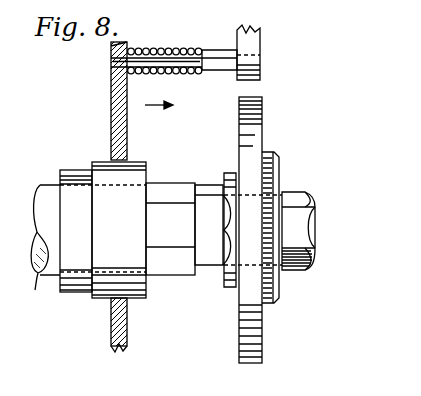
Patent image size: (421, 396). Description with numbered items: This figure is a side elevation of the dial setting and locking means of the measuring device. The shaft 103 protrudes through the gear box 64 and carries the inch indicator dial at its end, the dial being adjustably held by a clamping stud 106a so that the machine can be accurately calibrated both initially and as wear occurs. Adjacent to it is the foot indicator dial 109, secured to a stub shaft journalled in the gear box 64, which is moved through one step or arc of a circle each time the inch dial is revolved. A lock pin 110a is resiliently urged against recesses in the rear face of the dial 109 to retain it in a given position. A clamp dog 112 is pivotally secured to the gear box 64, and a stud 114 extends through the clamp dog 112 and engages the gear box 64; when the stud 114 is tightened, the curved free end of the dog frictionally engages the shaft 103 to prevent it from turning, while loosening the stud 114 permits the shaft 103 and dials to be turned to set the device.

The gear box 64 is at (128, 331).
The shaft 103 is at (42, 280).
The clamping stud 106a is at (293, 270).
The foot indicator dial 109 is at (262, 46).
The lock pin 110a is at (197, 75).
The clamp dog 112 is at (177, 183).
The stud 114 is at (208, 267).